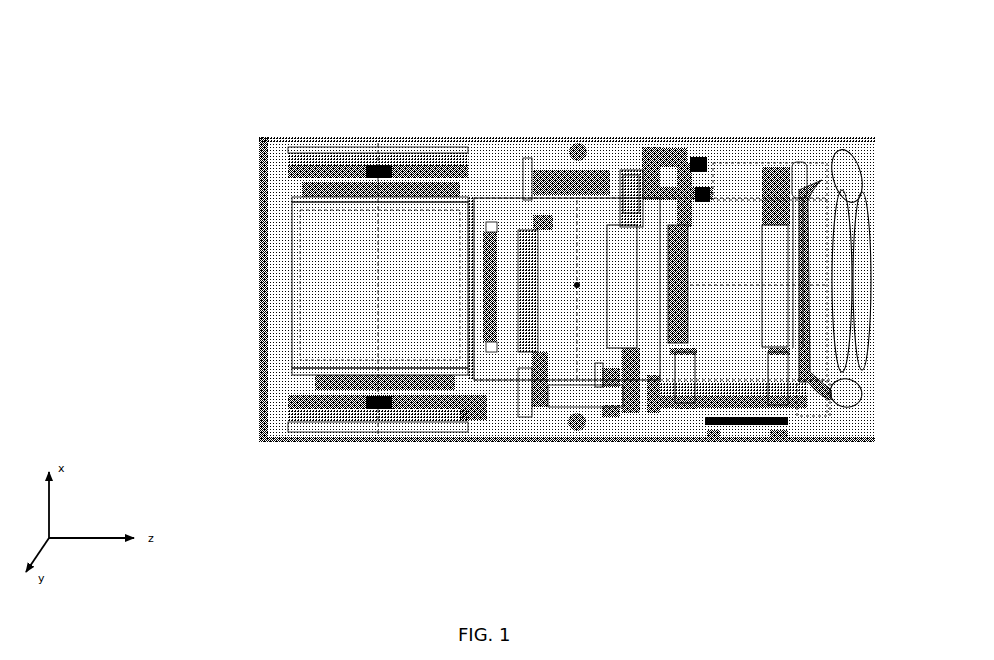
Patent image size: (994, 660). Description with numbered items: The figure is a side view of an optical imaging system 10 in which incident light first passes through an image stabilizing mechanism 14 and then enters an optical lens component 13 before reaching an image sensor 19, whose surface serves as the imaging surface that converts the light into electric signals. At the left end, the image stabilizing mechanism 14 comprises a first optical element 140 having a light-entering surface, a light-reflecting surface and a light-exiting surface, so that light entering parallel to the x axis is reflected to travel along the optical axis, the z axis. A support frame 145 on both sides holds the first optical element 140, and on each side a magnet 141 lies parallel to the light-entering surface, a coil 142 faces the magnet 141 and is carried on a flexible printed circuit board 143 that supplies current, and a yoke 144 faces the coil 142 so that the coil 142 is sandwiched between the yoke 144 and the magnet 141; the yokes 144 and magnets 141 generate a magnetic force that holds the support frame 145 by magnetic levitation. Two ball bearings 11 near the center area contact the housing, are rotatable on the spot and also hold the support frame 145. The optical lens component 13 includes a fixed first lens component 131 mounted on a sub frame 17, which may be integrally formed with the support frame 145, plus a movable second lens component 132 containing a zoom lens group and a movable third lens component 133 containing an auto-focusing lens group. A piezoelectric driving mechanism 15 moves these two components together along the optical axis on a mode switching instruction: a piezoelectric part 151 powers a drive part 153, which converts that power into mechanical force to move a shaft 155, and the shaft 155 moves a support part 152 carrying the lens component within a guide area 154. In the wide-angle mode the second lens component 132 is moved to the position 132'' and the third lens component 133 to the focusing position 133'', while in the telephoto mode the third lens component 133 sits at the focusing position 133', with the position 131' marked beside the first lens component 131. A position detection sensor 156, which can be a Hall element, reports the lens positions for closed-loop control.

The optical imaging system 10 is at (176, 141).
The ball bearing 11 is at (580, 143).
The optical lens component 13 is at (752, 73).
The first lens component 131 is at (503, 221).
The first lens holder 131' is at (550, 262).
The second lens component 132 is at (580, 213).
The second position of second lens component 132'' is at (588, 228).
The third lens component 133 is at (717, 215).
The focusing position of third lens component in telephoto mode 133' is at (693, 229).
The focusing position of third lens component in wide-angle mode 133'' is at (782, 232).
The image stabilizing mechanism 14 is at (205, 410).
The first optical element 140 is at (300, 258).
The magnet 141 is at (302, 189).
The coil 142 is at (290, 172).
The flexible printed circuit board 143 is at (290, 159).
The yoke 144 is at (293, 150).
The support frame 145 is at (292, 200).
The piezoelectric driving mechanism 15 is at (812, 482).
The piezoelectric part 151 is at (641, 408).
The support part 152 is at (687, 409).
The drive part 153 is at (725, 402).
The guide area 154 is at (745, 187).
The shaft 155 is at (805, 410).
The position detection sensor 156 is at (763, 414).
The sub frame 17 is at (497, 412).
The image sensor 19 is at (800, 332).